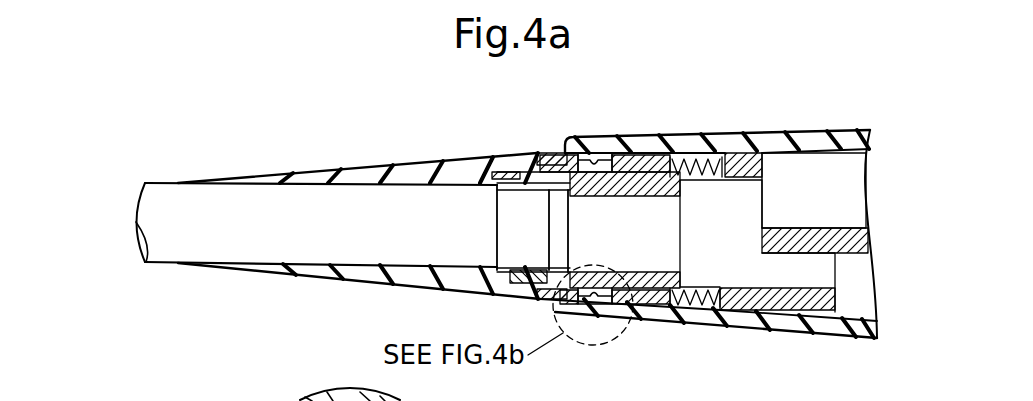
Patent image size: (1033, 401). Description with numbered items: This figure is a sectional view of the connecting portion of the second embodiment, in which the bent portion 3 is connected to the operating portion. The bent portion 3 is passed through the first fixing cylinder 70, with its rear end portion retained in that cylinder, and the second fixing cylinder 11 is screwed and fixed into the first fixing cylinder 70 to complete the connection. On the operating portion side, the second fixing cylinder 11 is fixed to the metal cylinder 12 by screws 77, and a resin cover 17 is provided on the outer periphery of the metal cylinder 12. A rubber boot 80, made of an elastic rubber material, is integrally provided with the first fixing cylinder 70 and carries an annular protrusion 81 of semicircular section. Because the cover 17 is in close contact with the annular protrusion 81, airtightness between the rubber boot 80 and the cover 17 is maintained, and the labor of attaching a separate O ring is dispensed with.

The bent portion 3 is at (227, 252).
The second fixing cylinder 11 is at (642, 330).
The metal cylinder 12 is at (823, 312).
The cover 17 is at (762, 310).
The first fixing cylinder 70 is at (642, 160).
The screws 77 is at (732, 153).
The rubber boot 80 is at (407, 165).
The annular protrusion 81 is at (595, 155).